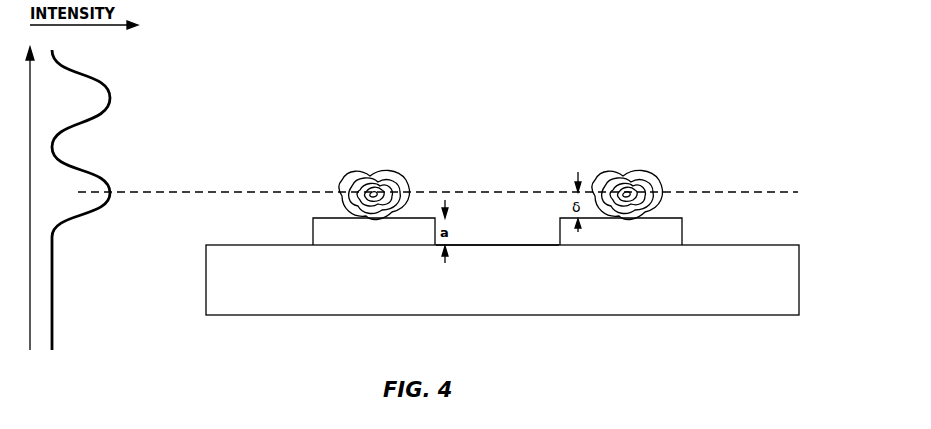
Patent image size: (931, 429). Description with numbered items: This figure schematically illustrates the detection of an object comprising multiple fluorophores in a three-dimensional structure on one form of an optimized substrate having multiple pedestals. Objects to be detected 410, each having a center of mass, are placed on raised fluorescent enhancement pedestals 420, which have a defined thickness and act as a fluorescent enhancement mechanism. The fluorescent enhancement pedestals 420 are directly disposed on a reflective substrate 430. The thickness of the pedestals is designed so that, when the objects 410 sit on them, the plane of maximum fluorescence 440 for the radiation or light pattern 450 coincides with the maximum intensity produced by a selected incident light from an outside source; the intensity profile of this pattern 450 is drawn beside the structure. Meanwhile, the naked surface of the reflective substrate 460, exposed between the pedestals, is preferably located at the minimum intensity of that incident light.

The objects to be detected 410 is at (372, 172).
The fluorescent enhancement pedestals 420 is at (432, 216).
The reflective substrate 430 is at (265, 310).
The plane of maximum fluorescence 440 is at (530, 190).
The radiation pattern 450 is at (112, 98).
The naked surface of the reflective substrate 460 is at (496, 247).